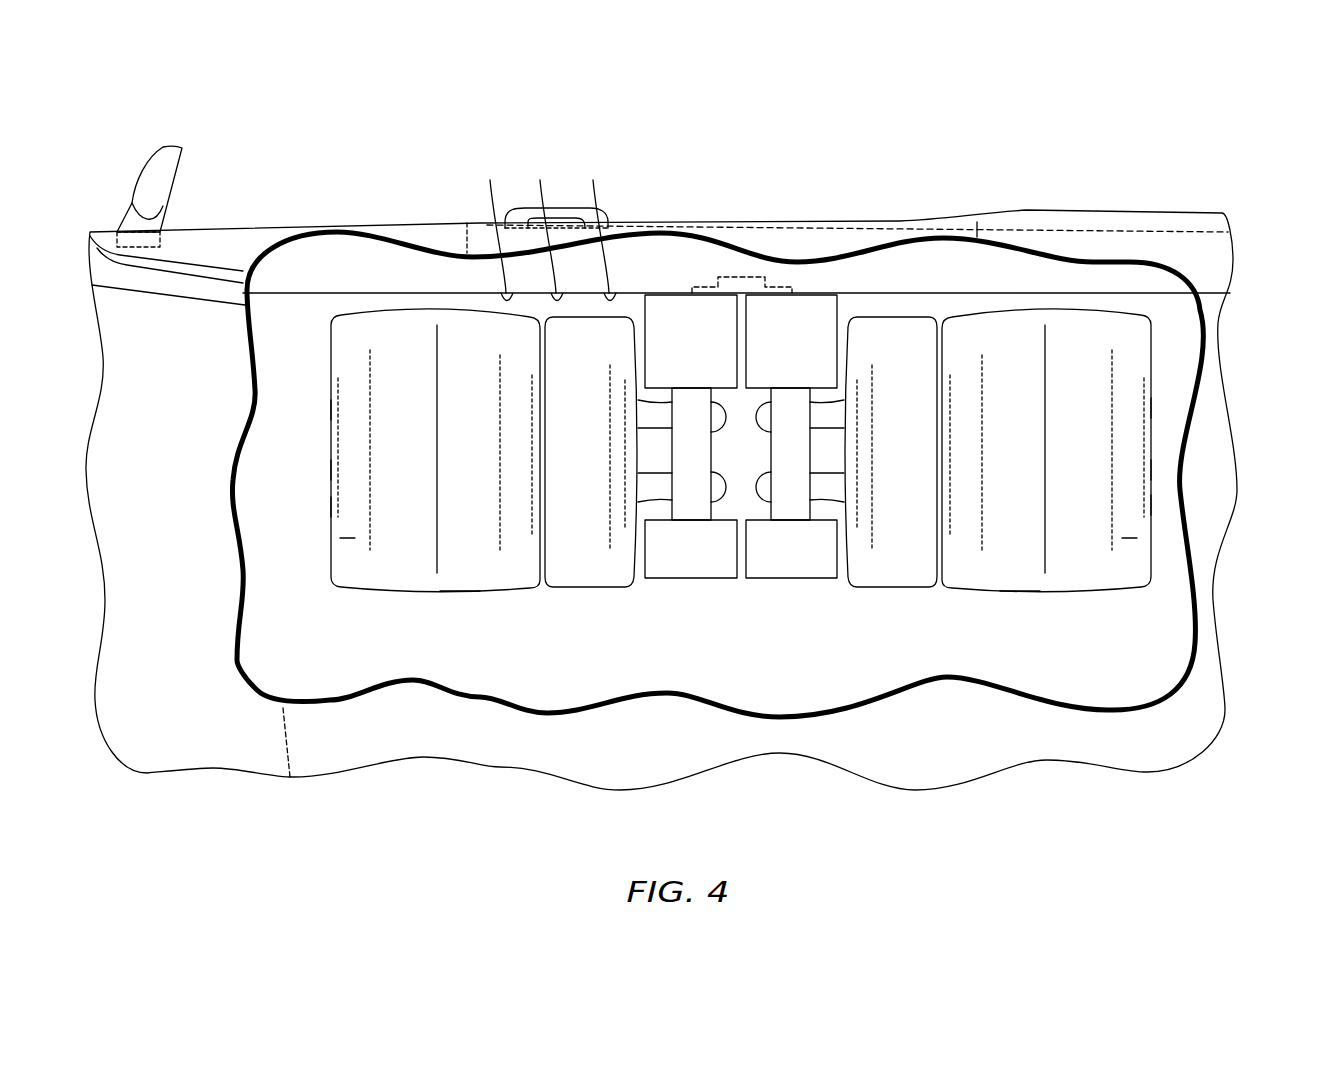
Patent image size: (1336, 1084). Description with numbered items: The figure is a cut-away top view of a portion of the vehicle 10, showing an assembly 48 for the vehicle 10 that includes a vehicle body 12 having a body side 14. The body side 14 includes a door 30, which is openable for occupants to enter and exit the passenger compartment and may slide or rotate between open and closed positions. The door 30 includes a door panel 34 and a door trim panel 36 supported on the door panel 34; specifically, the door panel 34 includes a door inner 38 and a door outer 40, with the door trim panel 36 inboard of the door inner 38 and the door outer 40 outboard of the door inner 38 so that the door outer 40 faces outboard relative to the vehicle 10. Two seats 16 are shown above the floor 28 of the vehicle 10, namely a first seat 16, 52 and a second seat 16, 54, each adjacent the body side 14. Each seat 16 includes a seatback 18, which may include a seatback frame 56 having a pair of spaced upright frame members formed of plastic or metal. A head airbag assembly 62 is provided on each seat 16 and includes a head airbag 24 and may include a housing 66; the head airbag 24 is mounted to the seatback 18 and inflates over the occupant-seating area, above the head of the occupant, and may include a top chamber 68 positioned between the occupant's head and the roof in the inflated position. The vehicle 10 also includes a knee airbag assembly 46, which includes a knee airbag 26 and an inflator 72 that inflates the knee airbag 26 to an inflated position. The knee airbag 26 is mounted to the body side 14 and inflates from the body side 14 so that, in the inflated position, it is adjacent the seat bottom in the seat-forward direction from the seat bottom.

The vehicle 10 is at (1108, 202).
The vehicle body 12 is at (1039, 204).
The body side 14 is at (684, 195).
The seat 16 is at (740, 451).
The seatback 18 is at (330, 410).
The head airbag 24 is at (390, 337).
The knee airbag 26 is at (770, 578).
The floor 28 is at (333, 655).
The door 30 is at (848, 222).
The door panel 34 is at (496, 224).
The door trim panel 36 is at (546, 224).
The door inner 38 is at (599, 224).
The door outer 40 is at (633, 222).
The knee airbag assembly 46 is at (643, 597).
The assembly 48 is at (1208, 180).
The first seat 52 is at (330, 358).
The second seat 54 is at (1152, 357).
The seatback frame 56 is at (330, 470).
The head airbag assembly 62 is at (463, 597).
The housing 66 is at (330, 507).
The top chamber 68 is at (347, 538).
The inflator 72 is at (736, 277).